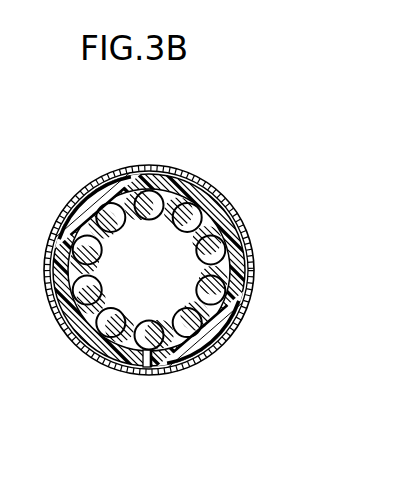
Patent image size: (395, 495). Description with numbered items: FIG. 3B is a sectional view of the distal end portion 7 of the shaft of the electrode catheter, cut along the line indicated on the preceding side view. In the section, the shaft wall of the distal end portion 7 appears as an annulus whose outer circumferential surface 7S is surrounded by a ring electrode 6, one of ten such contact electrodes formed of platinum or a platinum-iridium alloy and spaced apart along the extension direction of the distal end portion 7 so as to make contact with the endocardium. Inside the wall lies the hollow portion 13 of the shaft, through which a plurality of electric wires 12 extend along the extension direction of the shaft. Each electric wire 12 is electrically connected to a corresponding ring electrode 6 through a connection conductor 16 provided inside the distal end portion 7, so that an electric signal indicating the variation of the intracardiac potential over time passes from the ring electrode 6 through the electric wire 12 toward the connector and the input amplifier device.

The ring electrode 6 is at (182, 365).
The distal end portion 7 is at (205, 340).
The outer circumferential surface 7S is at (240, 319).
The electric wire 12 is at (118, 363).
The hollow portion 13 is at (138, 243).
The connection conductor 16 is at (128, 373).